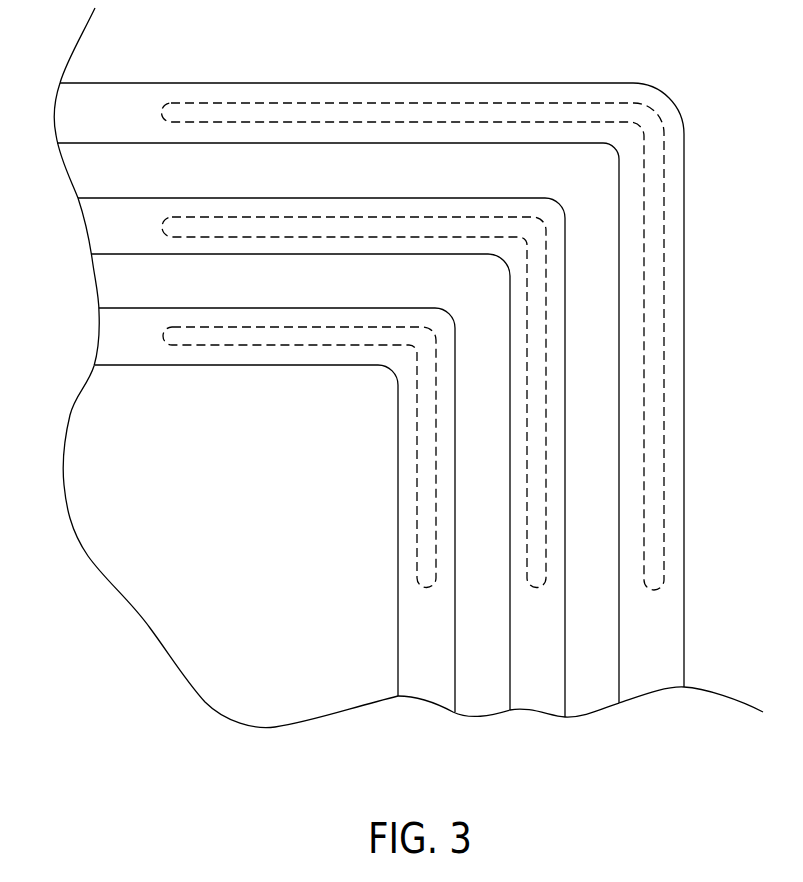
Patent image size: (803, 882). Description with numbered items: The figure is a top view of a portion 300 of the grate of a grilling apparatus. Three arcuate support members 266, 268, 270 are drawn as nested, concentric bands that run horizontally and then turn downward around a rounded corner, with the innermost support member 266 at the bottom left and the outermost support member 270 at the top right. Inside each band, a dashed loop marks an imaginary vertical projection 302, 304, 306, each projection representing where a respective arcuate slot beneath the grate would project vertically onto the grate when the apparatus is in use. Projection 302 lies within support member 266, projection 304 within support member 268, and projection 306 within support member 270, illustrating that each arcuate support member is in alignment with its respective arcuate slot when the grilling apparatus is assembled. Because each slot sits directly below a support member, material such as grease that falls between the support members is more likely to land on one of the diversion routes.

The portion 300 is at (180, 778).
The support member 270 is at (121, 128).
The support member 268 is at (146, 242).
The support member 266 is at (151, 352).
The vertical projection 306 is at (345, 130).
The vertical projection 304 is at (340, 240).
The vertical projection 302 is at (305, 350).